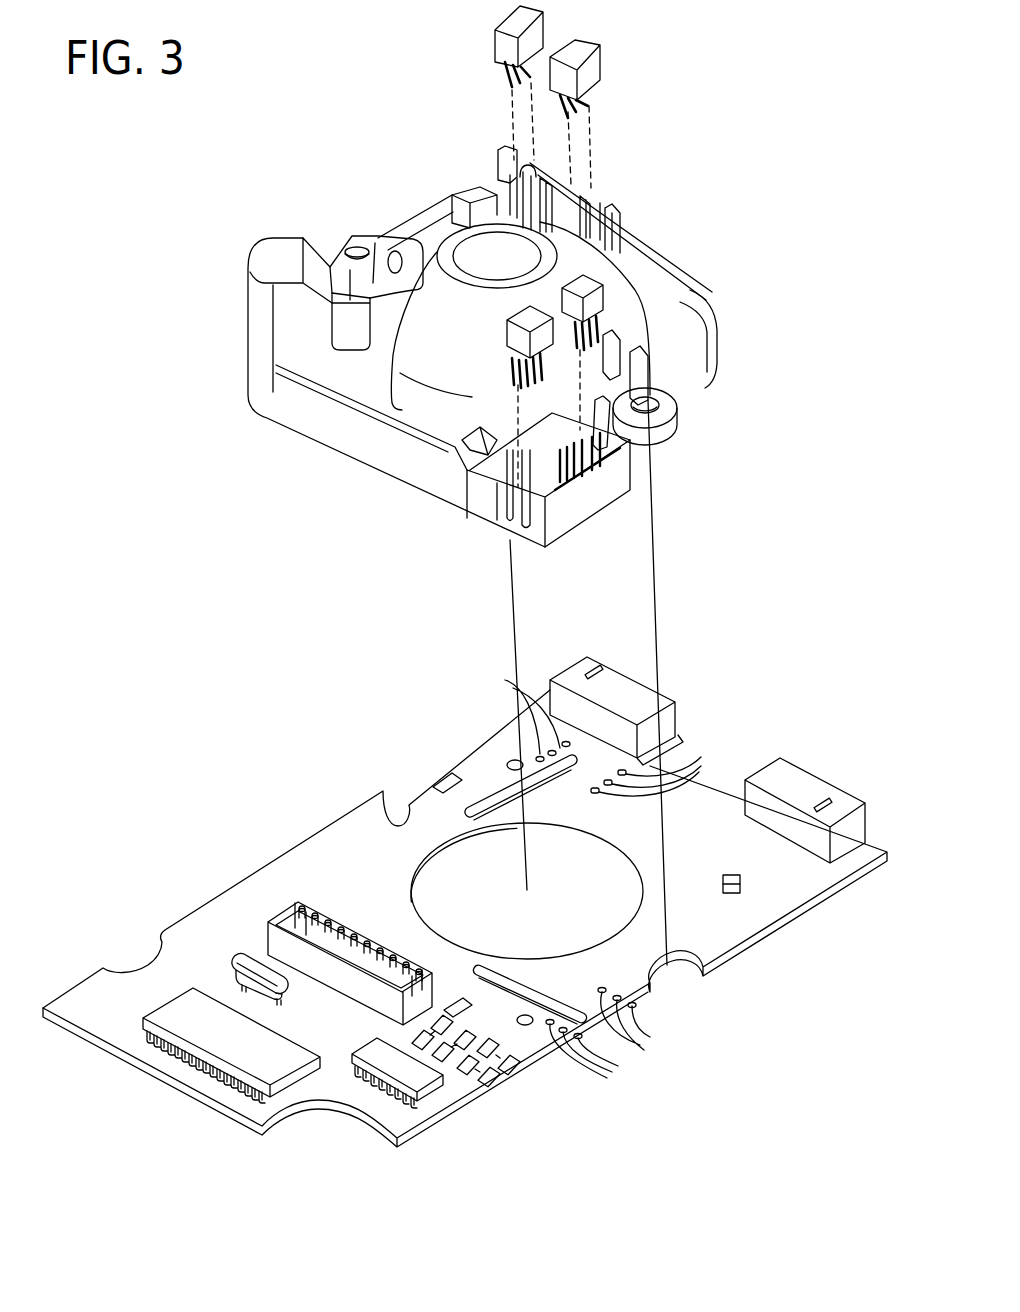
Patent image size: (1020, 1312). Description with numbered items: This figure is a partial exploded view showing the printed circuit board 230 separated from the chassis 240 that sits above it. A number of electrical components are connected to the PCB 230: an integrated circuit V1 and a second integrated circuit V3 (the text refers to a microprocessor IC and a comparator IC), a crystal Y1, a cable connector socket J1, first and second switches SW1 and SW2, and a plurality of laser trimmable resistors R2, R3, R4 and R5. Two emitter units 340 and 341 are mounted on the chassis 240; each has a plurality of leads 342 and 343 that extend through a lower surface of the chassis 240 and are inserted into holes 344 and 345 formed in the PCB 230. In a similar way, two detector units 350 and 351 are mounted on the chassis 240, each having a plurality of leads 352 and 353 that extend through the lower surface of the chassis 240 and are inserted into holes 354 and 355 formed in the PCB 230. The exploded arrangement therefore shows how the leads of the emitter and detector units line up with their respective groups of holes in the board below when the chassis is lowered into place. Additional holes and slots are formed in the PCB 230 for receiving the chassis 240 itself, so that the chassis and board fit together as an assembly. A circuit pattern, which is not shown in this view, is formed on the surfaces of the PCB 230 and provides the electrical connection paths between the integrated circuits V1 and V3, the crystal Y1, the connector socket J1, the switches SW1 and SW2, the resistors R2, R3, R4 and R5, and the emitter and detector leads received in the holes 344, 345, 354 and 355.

The chassis 240 is at (352, 214).
The printed circuit board 230 is at (336, 785).
The detector unit 350 is at (497, 34).
The leads 352 is at (510, 74).
The emitter unit 340 is at (583, 67).
The leads 342 is at (590, 104).
The emitter unit 341 is at (633, 287).
The leads 343 is at (650, 338).
The detector unit 351 is at (513, 337).
The leads 353 is at (505, 385).
The holes 354 is at (512, 713).
The holes 344 is at (667, 761).
The holes 345 is at (648, 1028).
The holes 355 is at (603, 1060).
The first switch SW1 is at (623, 692).
The second switch SW2 is at (801, 790).
The cable connector socket J1 is at (268, 945).
The crystal Y1 is at (240, 974).
The integrated circuit V1 is at (273, 1060).
The integrated circuit V3 is at (425, 1085).
The laser trimmable resistor R2 is at (465, 1012).
The laser trimmable resistor R3 is at (450, 1053).
The laser trimmable resistor R4 is at (490, 1082).
The laser trimmable resistor R5 is at (497, 1077).